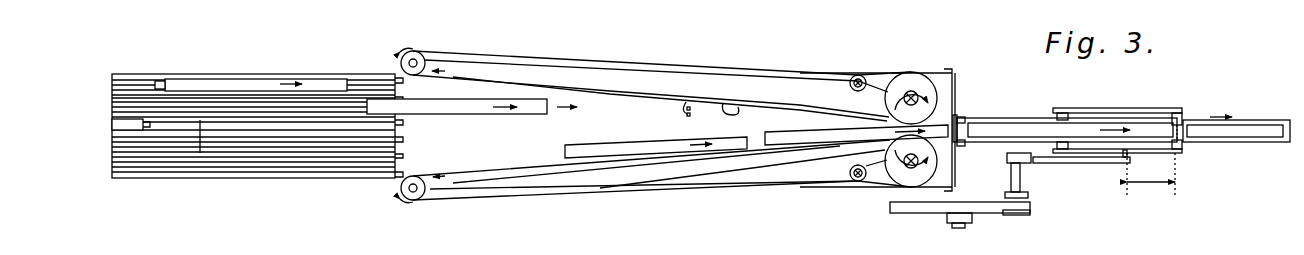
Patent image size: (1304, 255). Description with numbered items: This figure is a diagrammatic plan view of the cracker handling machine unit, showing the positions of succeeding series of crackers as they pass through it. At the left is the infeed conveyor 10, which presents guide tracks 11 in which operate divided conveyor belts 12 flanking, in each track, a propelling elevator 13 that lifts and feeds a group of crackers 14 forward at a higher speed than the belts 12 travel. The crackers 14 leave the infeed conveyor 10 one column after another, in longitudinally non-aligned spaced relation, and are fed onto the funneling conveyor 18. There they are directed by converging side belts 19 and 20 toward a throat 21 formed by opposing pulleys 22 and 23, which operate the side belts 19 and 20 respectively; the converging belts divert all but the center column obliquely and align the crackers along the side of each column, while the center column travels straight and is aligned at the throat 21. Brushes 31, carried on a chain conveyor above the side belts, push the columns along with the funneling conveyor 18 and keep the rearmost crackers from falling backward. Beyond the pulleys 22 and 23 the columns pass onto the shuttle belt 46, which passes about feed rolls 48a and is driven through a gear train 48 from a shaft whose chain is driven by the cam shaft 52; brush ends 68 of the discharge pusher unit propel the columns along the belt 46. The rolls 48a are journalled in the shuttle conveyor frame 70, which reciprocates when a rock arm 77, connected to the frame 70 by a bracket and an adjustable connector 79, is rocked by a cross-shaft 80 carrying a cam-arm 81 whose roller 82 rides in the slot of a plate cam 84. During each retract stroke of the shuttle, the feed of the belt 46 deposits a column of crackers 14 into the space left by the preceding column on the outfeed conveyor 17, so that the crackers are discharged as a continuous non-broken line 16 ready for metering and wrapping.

The infeed conveyor 10 is at (305, 178).
The guide tracks 11 is at (130, 84).
The divided conveyor belts 12 is at (220, 128).
The propelling elevator 13 is at (152, 130).
The crackers 14 is at (105, 120).
The continuous non-broken line 16 is at (1242, 130).
The outfeed conveyor 17 is at (1275, 143).
The funneling conveyor 18 is at (806, 80).
The side belt 19 is at (728, 104).
The side belt 20 is at (538, 190).
The throat 21 is at (932, 122).
The pulley 22 is at (911, 86).
The pulley 23 is at (905, 173).
The brushes 31 is at (684, 102).
The shuttle belt 46 is at (1012, 120).
The gear train 48 is at (1173, 110).
The feed rolls 48a is at (961, 118).
The cam shaft 52 is at (960, 226).
The brush ends 68 is at (960, 146).
The shuttle conveyor frame 70 is at (1145, 92).
The rock arm 77 is at (1010, 170).
The adjustable connector 79 is at (1103, 163).
The cross-shaft 80 is at (1022, 181).
The cam-arm 81 is at (1020, 215).
The roller 82 is at (1012, 200).
The plate cam 84 is at (920, 210).